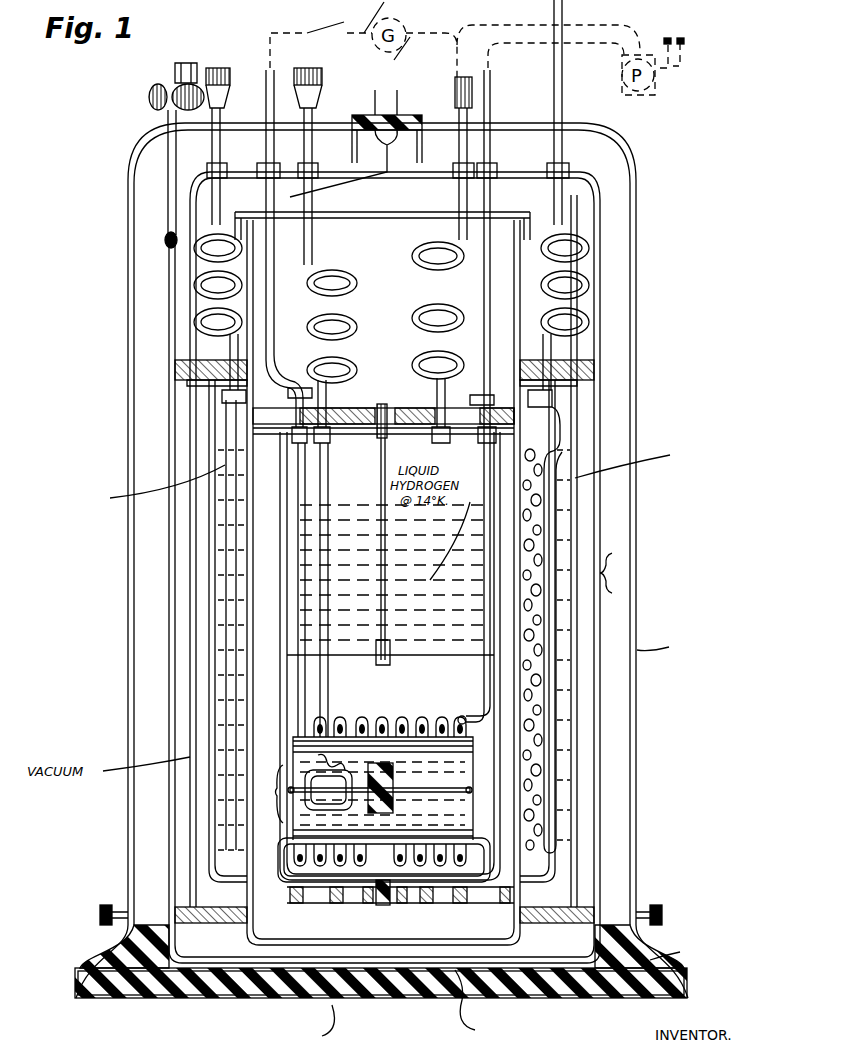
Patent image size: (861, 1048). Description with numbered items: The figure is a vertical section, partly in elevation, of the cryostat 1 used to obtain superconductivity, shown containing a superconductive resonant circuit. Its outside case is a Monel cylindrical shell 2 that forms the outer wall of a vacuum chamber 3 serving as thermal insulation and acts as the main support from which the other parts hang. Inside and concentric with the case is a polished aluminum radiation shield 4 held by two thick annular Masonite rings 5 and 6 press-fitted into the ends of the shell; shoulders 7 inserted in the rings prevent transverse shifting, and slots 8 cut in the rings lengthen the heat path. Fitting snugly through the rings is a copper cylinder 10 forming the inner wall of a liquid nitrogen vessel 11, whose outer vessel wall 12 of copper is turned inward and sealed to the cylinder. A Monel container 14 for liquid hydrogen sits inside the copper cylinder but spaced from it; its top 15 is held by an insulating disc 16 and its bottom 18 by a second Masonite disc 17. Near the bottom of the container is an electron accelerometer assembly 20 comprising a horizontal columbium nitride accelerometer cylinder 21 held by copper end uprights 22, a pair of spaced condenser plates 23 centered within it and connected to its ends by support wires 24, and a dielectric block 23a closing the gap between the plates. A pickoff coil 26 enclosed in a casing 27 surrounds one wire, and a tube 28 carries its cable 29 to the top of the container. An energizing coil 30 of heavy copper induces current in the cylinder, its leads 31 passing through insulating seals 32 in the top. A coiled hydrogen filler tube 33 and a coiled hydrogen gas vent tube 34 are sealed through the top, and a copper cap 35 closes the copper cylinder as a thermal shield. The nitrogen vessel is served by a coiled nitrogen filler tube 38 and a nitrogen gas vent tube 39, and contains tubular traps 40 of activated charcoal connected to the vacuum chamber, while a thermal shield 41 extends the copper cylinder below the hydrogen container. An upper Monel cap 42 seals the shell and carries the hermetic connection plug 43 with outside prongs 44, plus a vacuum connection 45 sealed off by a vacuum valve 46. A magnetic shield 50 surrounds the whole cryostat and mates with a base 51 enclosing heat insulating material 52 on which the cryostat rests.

The cryostat 1 is at (617, 570).
The cylindrical shell 2 is at (600, 610).
The vacuum chamber 3 is at (600, 745).
The radiation shield 4 is at (574, 681).
The Masonite ring 5 is at (600, 360).
The Masonite ring 6 is at (600, 915).
The shoulders 7 is at (600, 380).
The slots 8 is at (597, 353).
The copper cylinder 10 is at (575, 413).
The liquid nitrogen vessel 11 is at (215, 842).
The outer vessel wall 12 is at (210, 633).
The container for liquid hydrogen 14 is at (600, 782).
The top of the container 15 is at (380, 403).
The insulating disc 16 is at (405, 410).
The second Masonite disc 17 is at (410, 905).
The bottom of the hydrogen container 18 is at (383, 895).
The electron accelerometer assembly 20 is at (270, 790).
The accelerometer cylinder 21 is at (385, 735).
The copper end uprights 22 is at (235, 870).
The condenser plates 23 is at (395, 818).
The dielectric block 23a is at (395, 785).
The support wires 24 is at (298, 800).
The pickoff coil 26 is at (325, 737).
The casing 27 is at (350, 750).
The tube 28 is at (300, 458).
The cable 29 is at (305, 265).
The energizing coil 30 is at (440, 720).
The leads 31 is at (318, 485).
The insulating seals 32 is at (312, 392).
The hydrogen filler tube 33 is at (340, 325).
The hydrogen gas vent tube 34 is at (440, 275).
The copper cap 35 is at (395, 218).
The nitrogen filler tube 38 is at (200, 330).
The nitrogen gas vent tube 39 is at (600, 255).
The tubular traps 40 is at (560, 440).
The thermal shield 41 is at (243, 937).
The upper Monel cap 42 is at (635, 178).
The hermetic connection plug 43 is at (408, 118).
The outside prongs 44 is at (386, 110).
The vacuum connection 45 is at (168, 118).
The vacuum valve 46 is at (165, 92).
The magnetic shield 50 is at (636, 832).
The base 51 is at (118, 945).
The heat insulating material 52 is at (132, 1005).